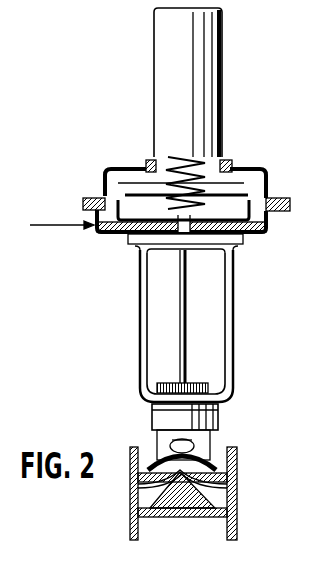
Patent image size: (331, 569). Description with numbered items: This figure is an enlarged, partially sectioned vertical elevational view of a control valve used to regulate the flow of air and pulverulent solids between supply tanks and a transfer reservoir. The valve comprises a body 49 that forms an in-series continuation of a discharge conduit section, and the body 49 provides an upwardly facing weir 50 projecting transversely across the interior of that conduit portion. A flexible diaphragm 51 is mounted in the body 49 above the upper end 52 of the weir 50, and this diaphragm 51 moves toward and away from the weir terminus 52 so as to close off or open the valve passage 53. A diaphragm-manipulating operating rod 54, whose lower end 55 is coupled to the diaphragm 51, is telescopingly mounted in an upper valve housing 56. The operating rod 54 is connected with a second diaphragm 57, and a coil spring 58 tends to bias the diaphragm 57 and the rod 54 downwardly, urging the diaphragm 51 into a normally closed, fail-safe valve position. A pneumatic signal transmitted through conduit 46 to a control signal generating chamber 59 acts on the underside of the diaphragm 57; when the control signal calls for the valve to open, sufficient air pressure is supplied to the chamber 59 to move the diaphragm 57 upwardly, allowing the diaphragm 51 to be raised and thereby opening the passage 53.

The conduit 46 is at (60, 225).
The coil spring 58 is at (176, 160).
The diaphragm 57 is at (258, 181).
The control signal generating chamber 59 is at (118, 236).
The upper valve housing 56 is at (235, 258).
The operating rod 54 is at (182, 318).
The flexible diaphragm 51 is at (210, 452).
The lower end 55 is at (160, 450).
The body 49 is at (237, 460).
The weir 50 is at (237, 500).
The valve passage 53 is at (237, 490).
The upper end 52 is at (150, 492).